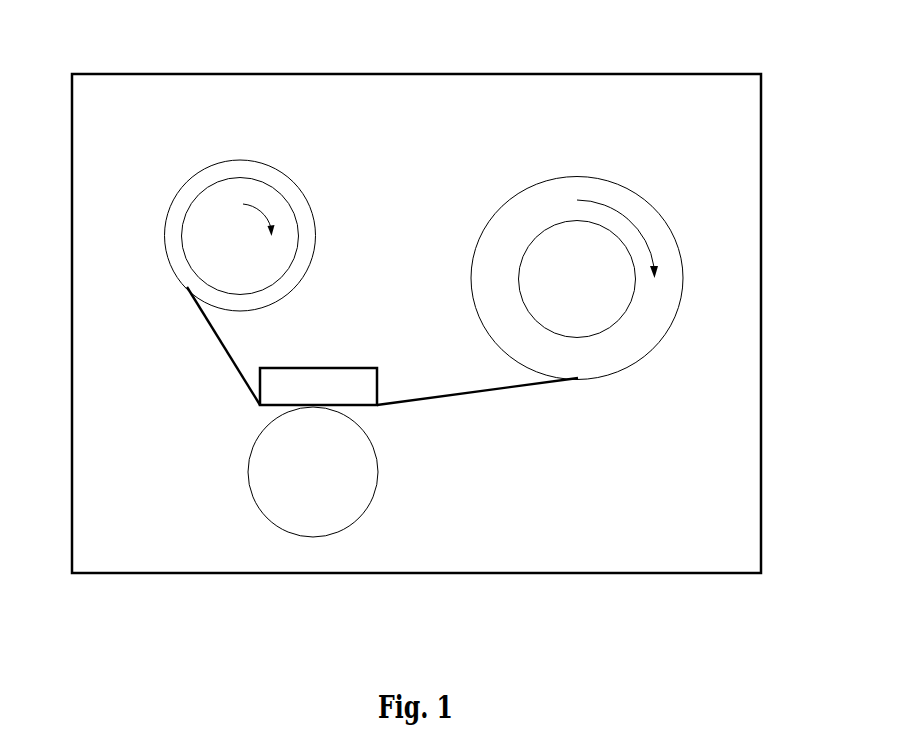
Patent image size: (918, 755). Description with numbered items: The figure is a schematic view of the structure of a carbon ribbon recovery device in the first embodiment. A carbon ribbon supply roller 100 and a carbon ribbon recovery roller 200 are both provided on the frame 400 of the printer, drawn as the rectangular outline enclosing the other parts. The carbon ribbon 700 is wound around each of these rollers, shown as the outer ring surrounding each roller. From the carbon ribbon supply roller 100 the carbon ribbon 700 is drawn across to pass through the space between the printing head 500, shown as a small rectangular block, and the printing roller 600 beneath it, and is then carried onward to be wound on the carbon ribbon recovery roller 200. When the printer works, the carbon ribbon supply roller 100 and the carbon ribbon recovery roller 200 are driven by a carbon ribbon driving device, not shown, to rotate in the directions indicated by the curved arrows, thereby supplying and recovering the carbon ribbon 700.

The carbon ribbon supply roller 100 is at (577, 278).
The carbon ribbon recovery roller 200 is at (219, 211).
The frame 400 is at (482, 117).
The printing head 500 is at (313, 390).
The printing roller 600 is at (314, 510).
The carbon ribbon 700 is at (260, 173).